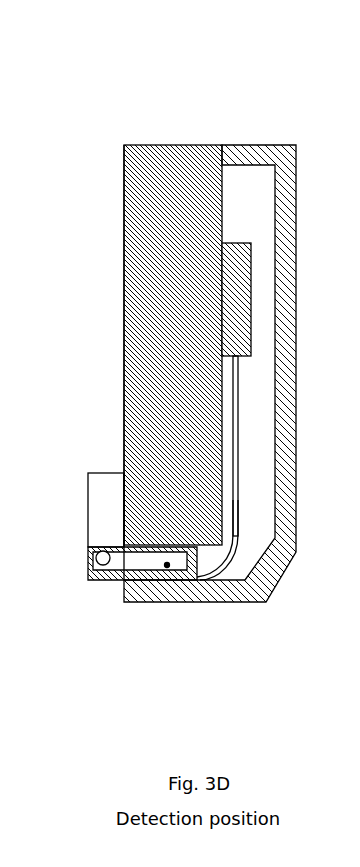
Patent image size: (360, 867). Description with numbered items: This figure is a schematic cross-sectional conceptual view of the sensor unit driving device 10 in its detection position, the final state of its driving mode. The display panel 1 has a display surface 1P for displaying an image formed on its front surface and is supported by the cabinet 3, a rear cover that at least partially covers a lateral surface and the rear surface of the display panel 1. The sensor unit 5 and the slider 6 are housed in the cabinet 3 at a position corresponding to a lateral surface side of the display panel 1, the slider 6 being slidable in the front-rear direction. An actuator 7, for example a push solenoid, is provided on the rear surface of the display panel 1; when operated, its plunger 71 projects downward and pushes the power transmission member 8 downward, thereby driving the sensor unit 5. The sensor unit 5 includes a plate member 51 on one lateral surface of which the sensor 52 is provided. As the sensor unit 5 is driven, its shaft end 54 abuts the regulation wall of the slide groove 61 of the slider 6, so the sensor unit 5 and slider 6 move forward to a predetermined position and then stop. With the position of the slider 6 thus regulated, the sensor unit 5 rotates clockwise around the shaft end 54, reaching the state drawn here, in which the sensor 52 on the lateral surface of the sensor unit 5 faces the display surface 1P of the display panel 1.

The display panel 1 is at (171, 145).
The display surface 1P is at (124, 188).
The sensor unit driving device 10 is at (238, 124).
The cabinet 3 is at (297, 232).
The sensor unit 5 is at (123, 527).
The slider 6 is at (183, 572).
The actuator 7 is at (230, 243).
The power transmission member 8 is at (233, 507).
The plate member 51 is at (112, 473).
The sensor 52 is at (125, 492).
The shaft end 54 is at (85, 595).
The slide groove 61 is at (167, 567).
The plunger 71 is at (243, 383).